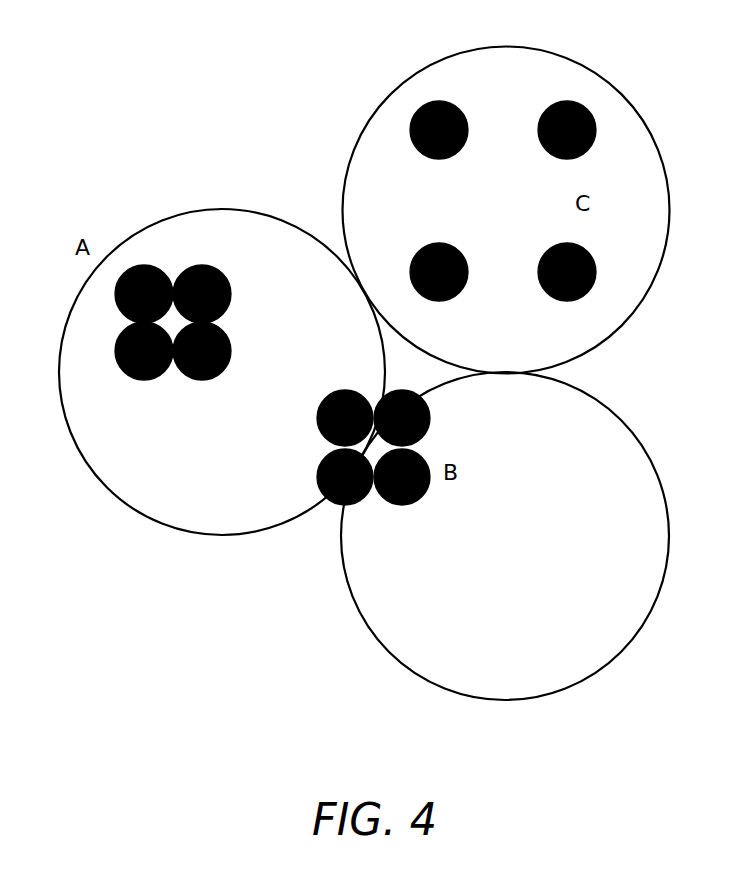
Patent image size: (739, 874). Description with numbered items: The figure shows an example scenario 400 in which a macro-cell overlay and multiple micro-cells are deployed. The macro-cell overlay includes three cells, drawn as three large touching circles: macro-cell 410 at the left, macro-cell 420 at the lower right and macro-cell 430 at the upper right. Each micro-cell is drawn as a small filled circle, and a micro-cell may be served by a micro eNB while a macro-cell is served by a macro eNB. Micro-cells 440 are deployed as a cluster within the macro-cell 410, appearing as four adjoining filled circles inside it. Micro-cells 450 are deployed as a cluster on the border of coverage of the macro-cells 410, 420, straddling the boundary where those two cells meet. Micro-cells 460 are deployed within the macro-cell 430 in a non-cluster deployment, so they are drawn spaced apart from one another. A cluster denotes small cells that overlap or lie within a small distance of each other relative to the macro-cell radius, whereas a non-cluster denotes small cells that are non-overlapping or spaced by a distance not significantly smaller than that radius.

The scenario 400 is at (364, 381).
The macro-cell 410 is at (178, 533).
The macro-cell 420 is at (450, 690).
The macro-cell 430 is at (424, 67).
The micro-cells 440 is at (202, 265).
The micro-cells 450 is at (400, 392).
The micro-cells 460 is at (440, 158).